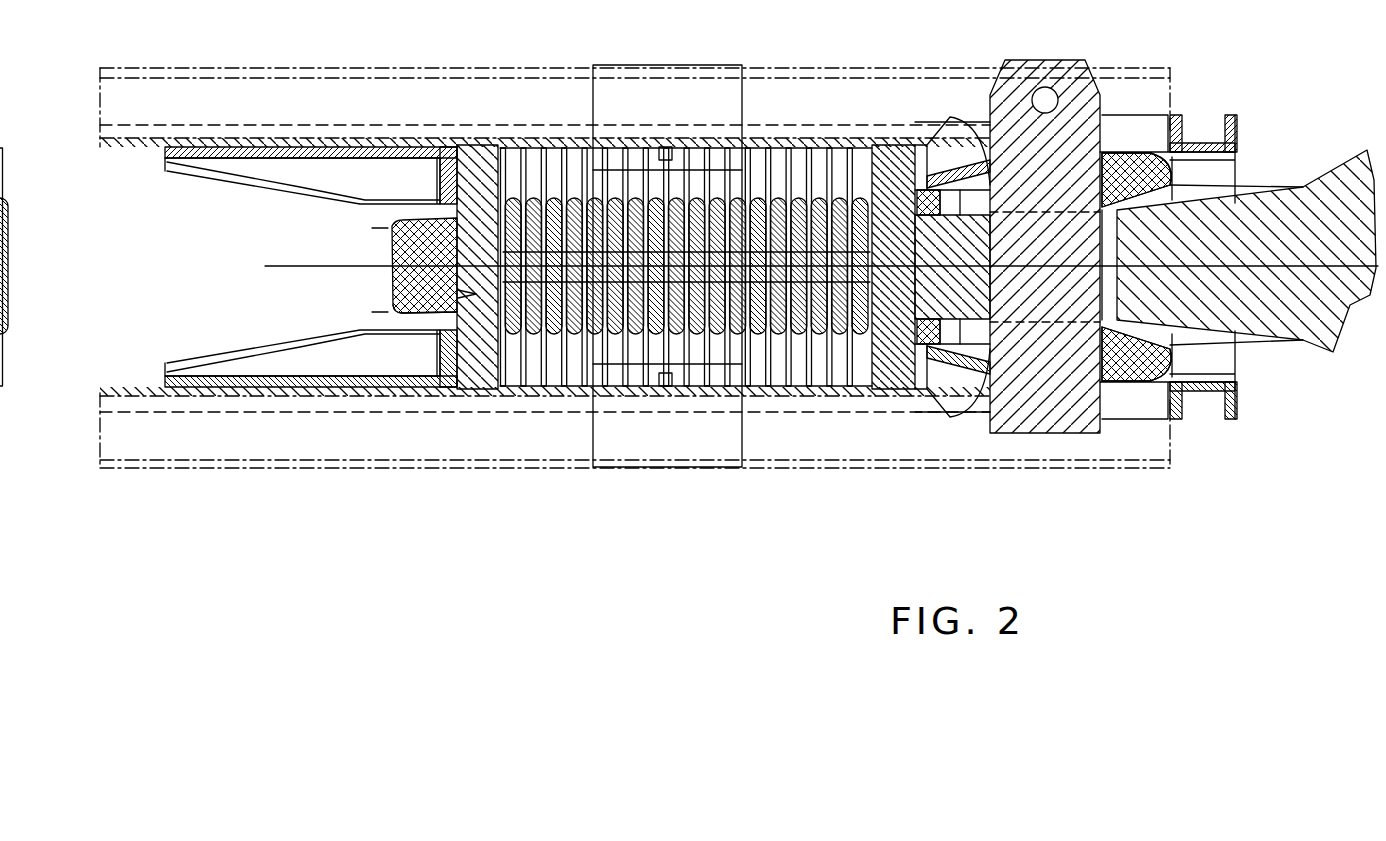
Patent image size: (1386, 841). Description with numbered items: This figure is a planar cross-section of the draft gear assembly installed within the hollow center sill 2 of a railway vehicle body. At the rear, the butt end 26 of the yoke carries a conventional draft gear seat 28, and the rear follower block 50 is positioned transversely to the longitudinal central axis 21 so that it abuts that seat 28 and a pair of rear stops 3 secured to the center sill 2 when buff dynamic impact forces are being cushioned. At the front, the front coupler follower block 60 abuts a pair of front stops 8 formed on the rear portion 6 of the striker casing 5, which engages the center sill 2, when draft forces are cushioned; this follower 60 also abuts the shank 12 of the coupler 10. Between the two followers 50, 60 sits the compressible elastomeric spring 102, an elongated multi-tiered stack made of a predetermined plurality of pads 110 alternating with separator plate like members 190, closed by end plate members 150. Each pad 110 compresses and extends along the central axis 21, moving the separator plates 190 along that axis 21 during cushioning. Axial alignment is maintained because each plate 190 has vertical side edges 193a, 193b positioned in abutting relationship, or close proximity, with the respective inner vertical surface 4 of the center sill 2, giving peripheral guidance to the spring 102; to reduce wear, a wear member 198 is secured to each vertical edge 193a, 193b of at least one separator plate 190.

The center sill 2 is at (203, 84).
The inner vertical surface 4 is at (127, 147).
The rear stops 3 is at (267, 168).
The butt end 26 is at (390, 233).
The draft gear seat 28 is at (393, 308).
The longitudinal central axis 21 is at (275, 266).
The rear follower block 50 is at (487, 147).
The front coupler follower block 60 is at (898, 150).
The front stops 8 is at (950, 140).
The coupler 10 is at (1342, 175).
The end plate members 150 is at (513, 372).
The compressible elastomeric spring 102 is at (560, 420).
The vertical side edge 193a is at (711, 150).
The vertical side edge 193b is at (627, 388).
The wear member 198 is at (667, 145).
The separator plate like members 190 is at (782, 352).
The pads 110 is at (829, 350).
The shank 12 is at (952, 295).
The rear portion 6 is at (965, 395).
The striker casing 5 is at (1140, 400).